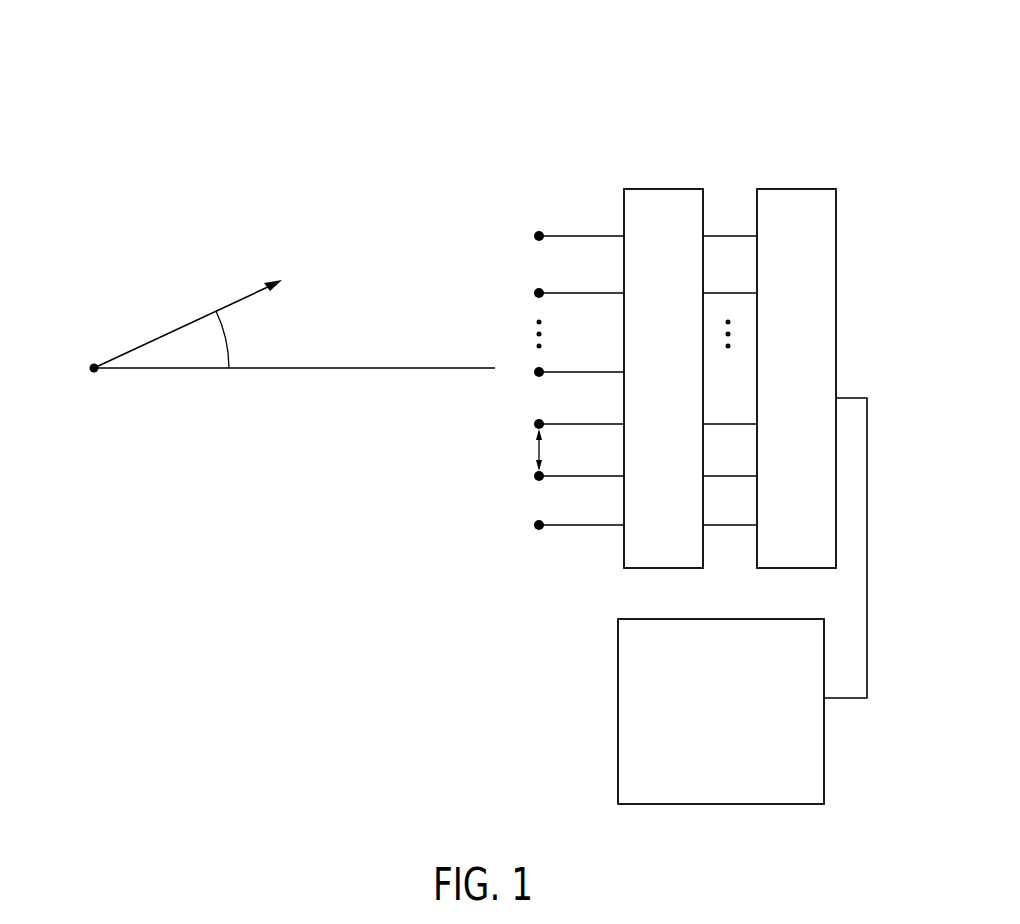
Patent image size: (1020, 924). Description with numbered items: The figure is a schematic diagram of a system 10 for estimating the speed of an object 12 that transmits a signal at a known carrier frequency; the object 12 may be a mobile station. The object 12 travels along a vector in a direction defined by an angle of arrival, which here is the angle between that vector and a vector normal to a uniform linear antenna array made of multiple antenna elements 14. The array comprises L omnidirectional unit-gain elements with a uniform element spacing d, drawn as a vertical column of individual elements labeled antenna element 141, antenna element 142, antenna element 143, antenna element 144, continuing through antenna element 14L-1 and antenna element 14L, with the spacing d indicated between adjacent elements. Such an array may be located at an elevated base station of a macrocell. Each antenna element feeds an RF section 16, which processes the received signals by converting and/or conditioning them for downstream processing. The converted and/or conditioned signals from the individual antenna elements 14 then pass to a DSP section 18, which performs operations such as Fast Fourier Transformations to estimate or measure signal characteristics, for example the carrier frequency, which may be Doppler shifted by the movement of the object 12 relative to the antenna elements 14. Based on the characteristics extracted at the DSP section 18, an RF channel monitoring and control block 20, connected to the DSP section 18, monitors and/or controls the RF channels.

The system 10 is at (530, 72).
The object 12 is at (95, 364).
The antenna elements 14 is at (539, 385).
The antenna element 14L is at (536, 236).
The antenna element 14L-1 is at (536, 293).
The antenna element 144 is at (536, 372).
The antenna element 143 is at (536, 424).
The antenna element 142 is at (536, 476).
The antenna element 141 is at (536, 525).
The RF section 16 is at (663, 189).
The DSP section 18 is at (797, 189).
The RF channel monitoring and control 20 is at (824, 760).